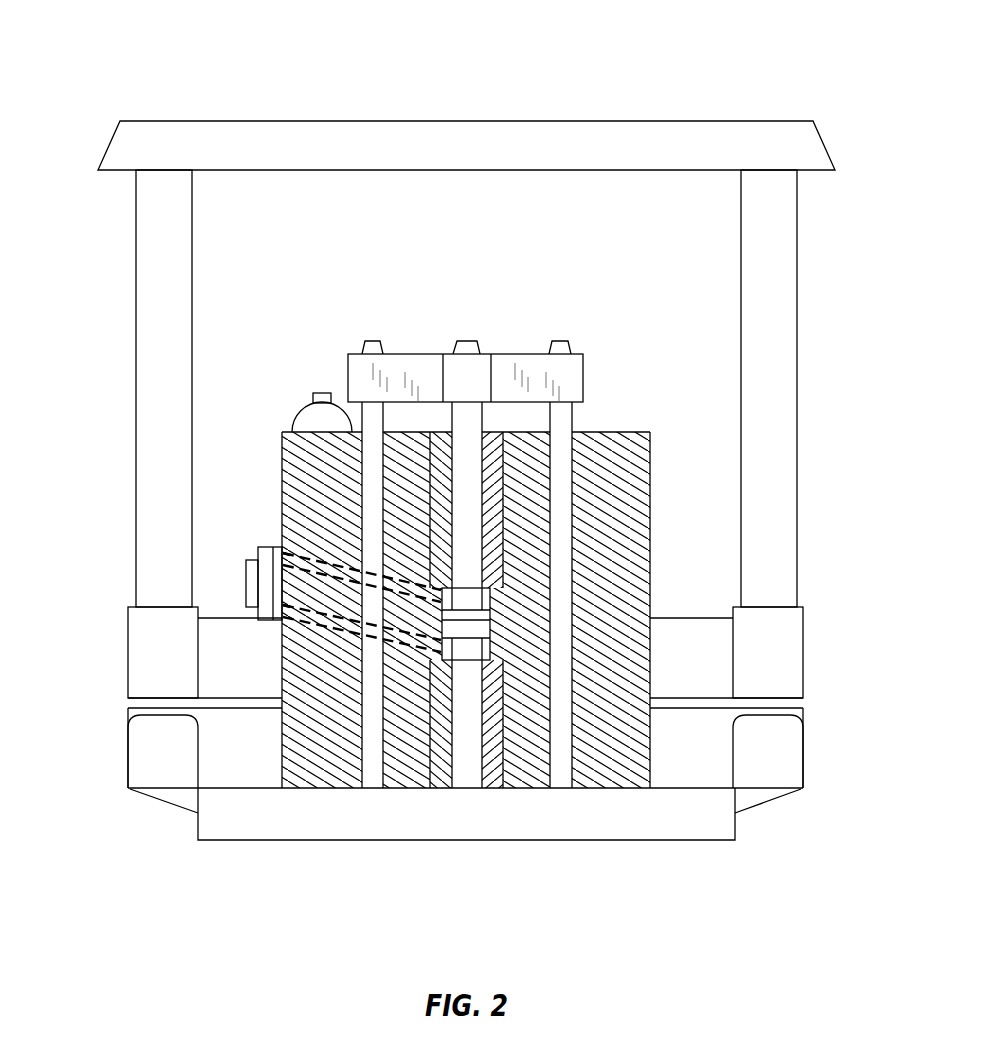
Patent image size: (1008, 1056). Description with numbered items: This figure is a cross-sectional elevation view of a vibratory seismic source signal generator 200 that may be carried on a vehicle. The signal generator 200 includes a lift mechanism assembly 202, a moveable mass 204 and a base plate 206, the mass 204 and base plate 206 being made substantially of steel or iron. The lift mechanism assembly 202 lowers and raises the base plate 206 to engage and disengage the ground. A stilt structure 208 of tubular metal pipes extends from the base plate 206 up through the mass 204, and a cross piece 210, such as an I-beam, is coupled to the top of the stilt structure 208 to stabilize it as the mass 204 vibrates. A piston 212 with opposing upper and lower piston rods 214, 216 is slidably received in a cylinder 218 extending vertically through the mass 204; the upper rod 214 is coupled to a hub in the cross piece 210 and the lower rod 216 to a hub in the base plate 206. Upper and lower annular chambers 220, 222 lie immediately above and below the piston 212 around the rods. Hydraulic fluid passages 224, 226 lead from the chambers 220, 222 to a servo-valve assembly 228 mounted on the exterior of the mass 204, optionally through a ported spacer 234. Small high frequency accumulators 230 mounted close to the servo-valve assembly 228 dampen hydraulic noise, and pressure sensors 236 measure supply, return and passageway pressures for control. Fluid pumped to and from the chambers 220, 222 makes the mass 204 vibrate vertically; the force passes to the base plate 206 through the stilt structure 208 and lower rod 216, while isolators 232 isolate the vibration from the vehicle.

The vibratory seismic source signal generator 200 is at (121, 121).
The lift mechanism assembly 202 is at (148, 243).
The moveable mass 204 is at (613, 487).
The base plate 206 is at (736, 840).
The stilt structure 208 is at (372, 777).
The cross piece 210 is at (573, 354).
The piston 212 is at (483, 618).
The upper piston rod 214 is at (467, 462).
The lower piston rod 216 is at (467, 777).
The cylinder 218 is at (438, 460).
The upper annular chamber 220 is at (492, 600).
The lower annular chamber 222 is at (493, 650).
The hydraulic fluid passage 224 is at (332, 628).
The hydraulic fluid passage 226 is at (312, 570).
The servo-valve assembly 228 is at (253, 568).
The high frequency accumulator 230 is at (292, 400).
The isolator 232 is at (137, 759).
The ported spacer 234 is at (270, 595).
The pressure sensor 236 is at (287, 553).